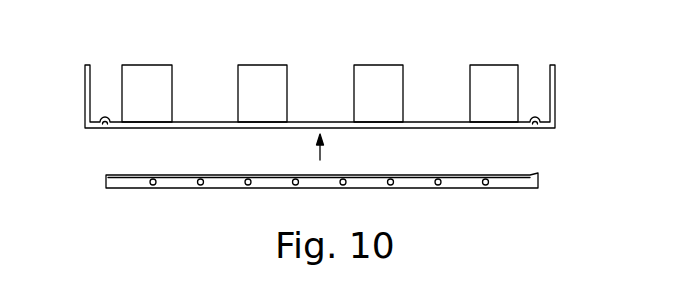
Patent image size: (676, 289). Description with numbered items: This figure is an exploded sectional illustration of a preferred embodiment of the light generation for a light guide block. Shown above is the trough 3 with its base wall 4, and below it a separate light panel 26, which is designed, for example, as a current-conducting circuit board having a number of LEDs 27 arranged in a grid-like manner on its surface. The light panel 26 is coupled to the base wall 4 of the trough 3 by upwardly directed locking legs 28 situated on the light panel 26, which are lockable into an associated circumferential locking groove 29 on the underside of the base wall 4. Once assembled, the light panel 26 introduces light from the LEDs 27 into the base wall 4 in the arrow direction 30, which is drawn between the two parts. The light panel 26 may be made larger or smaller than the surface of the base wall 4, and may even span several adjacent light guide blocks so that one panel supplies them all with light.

The trough 3 is at (318, 90).
The base wall 4 is at (432, 120).
The light panel 26 is at (172, 190).
The LEDs 27 is at (153, 190).
The locking legs 28 is at (105, 175).
The locking groove 29 is at (103, 128).
The arrow direction 30 is at (322, 148).